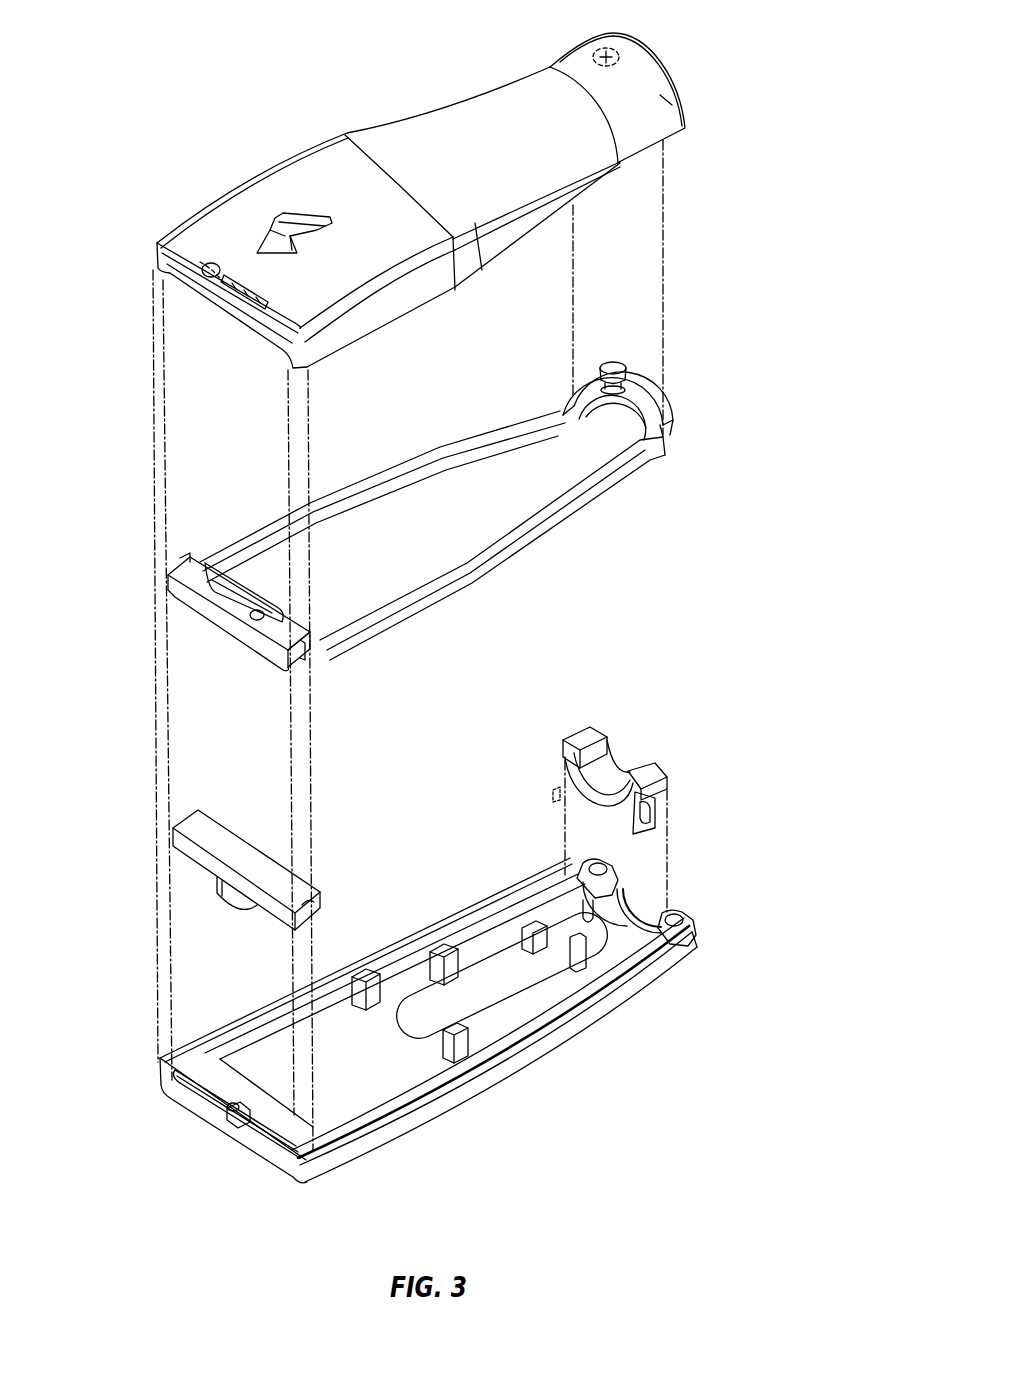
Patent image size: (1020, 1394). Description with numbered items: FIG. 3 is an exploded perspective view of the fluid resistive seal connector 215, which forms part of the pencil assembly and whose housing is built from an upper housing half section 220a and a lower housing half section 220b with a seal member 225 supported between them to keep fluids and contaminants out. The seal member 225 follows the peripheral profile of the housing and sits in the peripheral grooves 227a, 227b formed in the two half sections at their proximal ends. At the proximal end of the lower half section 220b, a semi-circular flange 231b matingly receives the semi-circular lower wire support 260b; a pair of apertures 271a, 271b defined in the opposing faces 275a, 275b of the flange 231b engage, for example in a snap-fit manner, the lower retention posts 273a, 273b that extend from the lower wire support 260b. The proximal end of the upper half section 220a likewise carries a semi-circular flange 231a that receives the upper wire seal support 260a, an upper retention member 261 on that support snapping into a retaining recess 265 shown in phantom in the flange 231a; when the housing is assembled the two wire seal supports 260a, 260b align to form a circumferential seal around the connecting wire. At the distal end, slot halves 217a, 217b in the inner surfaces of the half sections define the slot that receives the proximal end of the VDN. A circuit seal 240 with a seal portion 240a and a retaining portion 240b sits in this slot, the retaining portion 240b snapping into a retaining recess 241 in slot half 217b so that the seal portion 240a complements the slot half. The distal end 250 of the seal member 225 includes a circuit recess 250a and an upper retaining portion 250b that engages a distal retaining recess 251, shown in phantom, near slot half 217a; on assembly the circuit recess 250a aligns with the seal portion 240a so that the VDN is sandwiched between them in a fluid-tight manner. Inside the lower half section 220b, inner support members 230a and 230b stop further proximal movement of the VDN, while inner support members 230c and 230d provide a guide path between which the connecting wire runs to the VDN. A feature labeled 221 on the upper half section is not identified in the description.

The fluid resistive seal connector 215 is at (236, 84).
The housing half section 220a is at (450, 135).
The housing half section 220b is at (520, 1050).
The latch 221 is at (283, 212).
The slot half 217a is at (212, 311).
The slot half 217b is at (185, 1098).
The distal retaining recess 251 is at (228, 300).
The retaining recess 265 is at (598, 48).
The peripheral groove 227a is at (663, 75).
The peripheral groove 227b is at (630, 920).
The semi-circularly shaped flange 231a is at (660, 100).
The semi-circular shaped flange 231b is at (690, 950).
The seal member 225 is at (474, 596).
The upper wire seal support 260a is at (645, 418).
The lower wire support 260b is at (600, 782).
The upper retention member 261 is at (613, 368).
The distal end 250 is at (178, 564).
The circuit recess 250a is at (213, 622).
The upper retaining portion 250b is at (215, 562).
The circuit seal 240 is at (174, 804).
The seal portion 240a is at (217, 832).
The retaining portion 240b is at (228, 893).
The lower retention post 273a is at (656, 808).
The lower retention post 273b is at (560, 792).
The aperture 271a is at (698, 932).
The aperture 271b is at (575, 903).
The opposing face 275a is at (684, 922).
The opposing face 275b is at (590, 868).
The inner support member 230a is at (355, 969).
The inner support member 230b is at (490, 1048).
The inner support member 230c is at (440, 948).
The inner support member 230d is at (600, 985).
The retaining recess 241 is at (243, 1115).